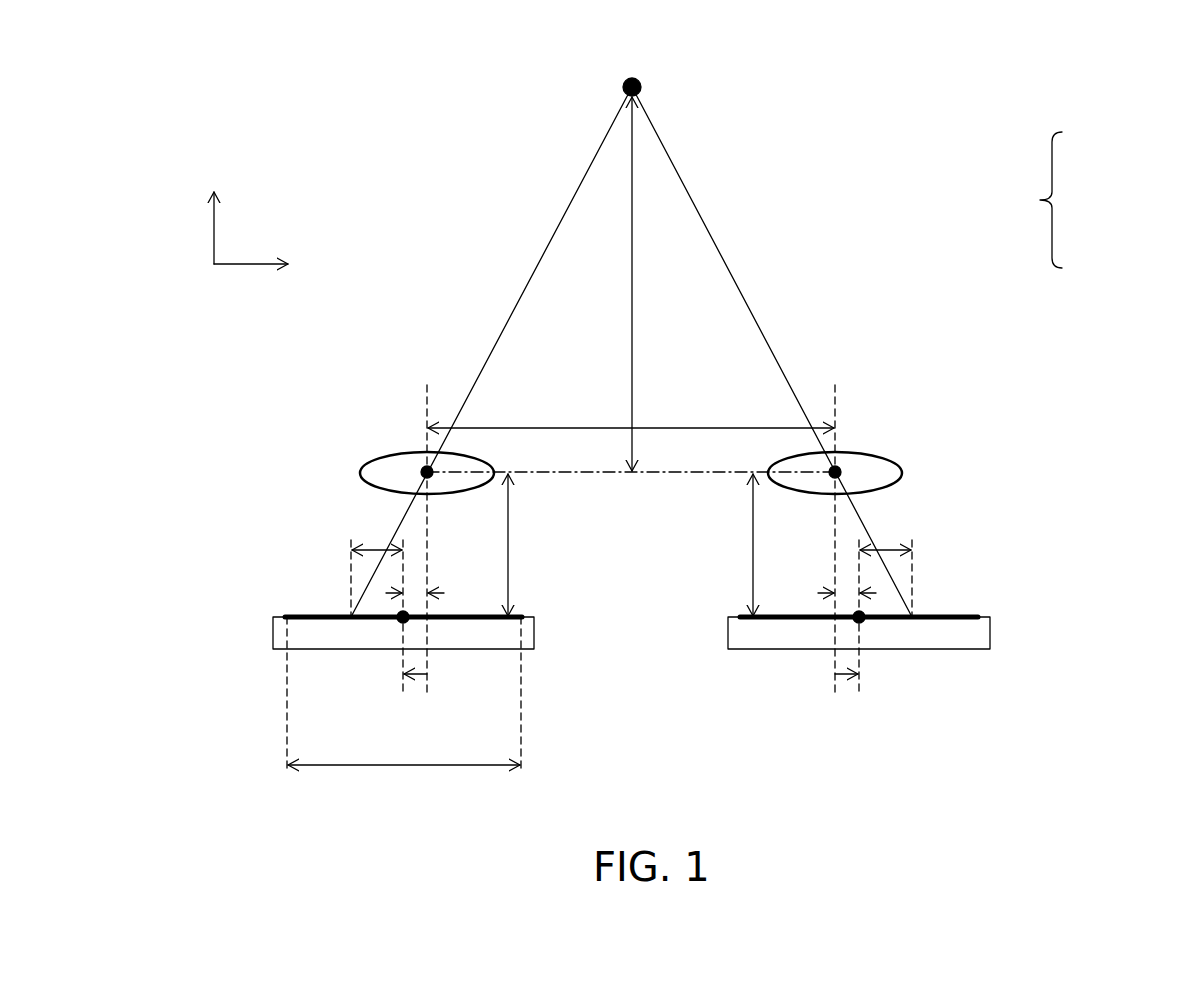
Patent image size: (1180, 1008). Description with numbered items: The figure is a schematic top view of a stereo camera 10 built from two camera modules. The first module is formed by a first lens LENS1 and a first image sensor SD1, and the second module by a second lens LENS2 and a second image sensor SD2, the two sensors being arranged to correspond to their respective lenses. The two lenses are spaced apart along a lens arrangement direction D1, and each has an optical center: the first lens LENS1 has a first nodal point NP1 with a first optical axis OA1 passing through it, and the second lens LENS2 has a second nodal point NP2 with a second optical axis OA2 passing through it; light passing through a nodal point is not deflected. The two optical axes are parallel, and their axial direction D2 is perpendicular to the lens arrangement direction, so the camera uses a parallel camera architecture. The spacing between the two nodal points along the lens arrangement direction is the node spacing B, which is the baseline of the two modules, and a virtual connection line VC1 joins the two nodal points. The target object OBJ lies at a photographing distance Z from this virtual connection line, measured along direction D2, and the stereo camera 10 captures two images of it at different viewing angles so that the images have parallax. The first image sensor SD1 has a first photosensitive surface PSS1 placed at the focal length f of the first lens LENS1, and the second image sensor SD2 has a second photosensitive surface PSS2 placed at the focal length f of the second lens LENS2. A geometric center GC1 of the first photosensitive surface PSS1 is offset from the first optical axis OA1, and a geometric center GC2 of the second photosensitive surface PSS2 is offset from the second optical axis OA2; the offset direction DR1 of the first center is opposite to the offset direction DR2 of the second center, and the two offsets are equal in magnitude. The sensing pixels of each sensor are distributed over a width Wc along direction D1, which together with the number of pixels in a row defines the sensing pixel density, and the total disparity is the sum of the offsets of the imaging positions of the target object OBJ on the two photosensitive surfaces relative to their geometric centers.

The stereo camera 10 is at (1081, 199).
The target object OBJ is at (641, 80).
The first lens LENS1 is at (377, 476).
The second lens LENS2 is at (888, 476).
The first nodal point NP1 is at (420, 465).
The second nodal point NP2 is at (843, 465).
The first optical axis OA1 is at (426, 522).
The second optical axis OA2 is at (836, 522).
The first image sensor SD1 is at (282, 638).
The second image sensor SD2 is at (982, 638).
The first photosensitive surface PSS1 is at (305, 612).
The second photosensitive surface PSS2 is at (958, 612).
The geometric center of the first photosensitive surface GC1 is at (403, 622).
The geometric center of the second photosensitive surface GC2 is at (859, 622).
The offset direction DR1 is at (415, 677).
The offset direction DR2 is at (849, 677).
The virtual connection line VC1 is at (663, 477).
The photographing distance Z is at (645, 284).
The node spacing B is at (631, 408).
The focal length f is at (630, 545).
The width of distribution range of sensing pixels Wc is at (404, 709).
The lens arrangement direction D1 is at (271, 263).
The axial direction D2 is at (217, 211).